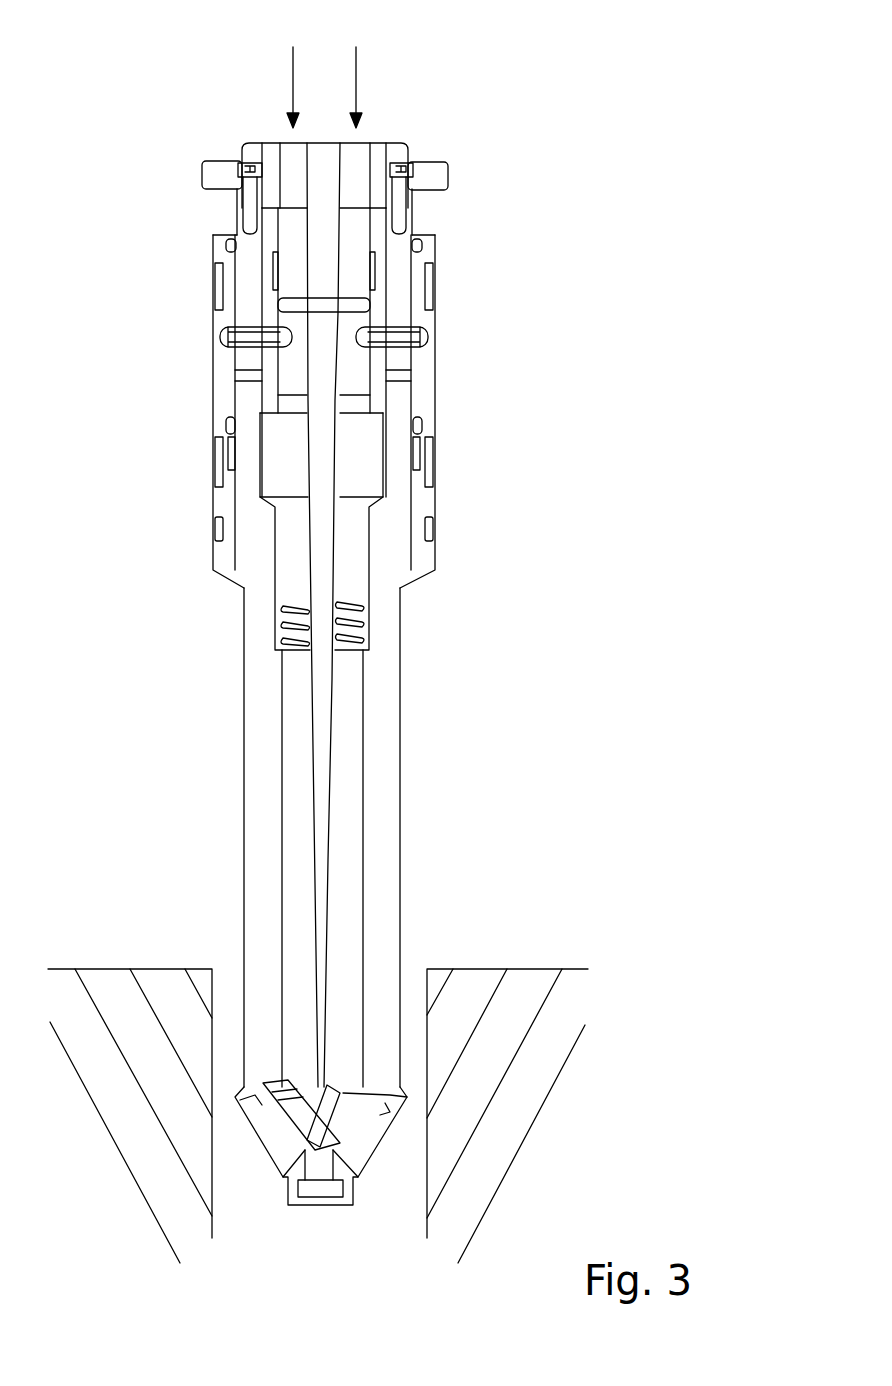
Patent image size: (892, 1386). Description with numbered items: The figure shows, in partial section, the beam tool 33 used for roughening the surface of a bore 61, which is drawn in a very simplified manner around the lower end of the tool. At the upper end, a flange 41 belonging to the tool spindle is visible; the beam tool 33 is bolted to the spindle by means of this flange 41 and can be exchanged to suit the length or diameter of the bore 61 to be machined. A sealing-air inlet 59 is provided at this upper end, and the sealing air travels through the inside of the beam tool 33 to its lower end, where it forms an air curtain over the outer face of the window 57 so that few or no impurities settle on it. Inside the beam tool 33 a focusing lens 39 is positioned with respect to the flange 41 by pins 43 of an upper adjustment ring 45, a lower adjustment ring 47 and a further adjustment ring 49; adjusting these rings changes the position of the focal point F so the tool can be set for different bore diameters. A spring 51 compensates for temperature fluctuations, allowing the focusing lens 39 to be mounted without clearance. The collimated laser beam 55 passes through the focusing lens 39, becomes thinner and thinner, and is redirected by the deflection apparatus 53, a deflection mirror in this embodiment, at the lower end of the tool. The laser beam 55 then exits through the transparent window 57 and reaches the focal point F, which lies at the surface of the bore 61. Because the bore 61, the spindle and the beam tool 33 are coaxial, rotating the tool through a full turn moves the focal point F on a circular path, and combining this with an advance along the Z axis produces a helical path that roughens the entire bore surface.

The sealing-air inlet 59 is at (357, 74).
The flange 41 is at (437, 173).
The upper adjustment ring 45 is at (213, 240).
The pins 43 is at (224, 340).
The focusing lens 39 is at (356, 301).
The lower adjustment ring 47 is at (223, 407).
The further adjustment ring 49 is at (223, 523).
The spring 51 is at (377, 628).
The beam tool 33 is at (380, 770).
The laser beam 55 is at (318, 785).
The deflection apparatus 53 is at (318, 1105).
The window 57 is at (247, 1132).
The bore 61 is at (427, 1190).
The focal point F is at (262, 1137).